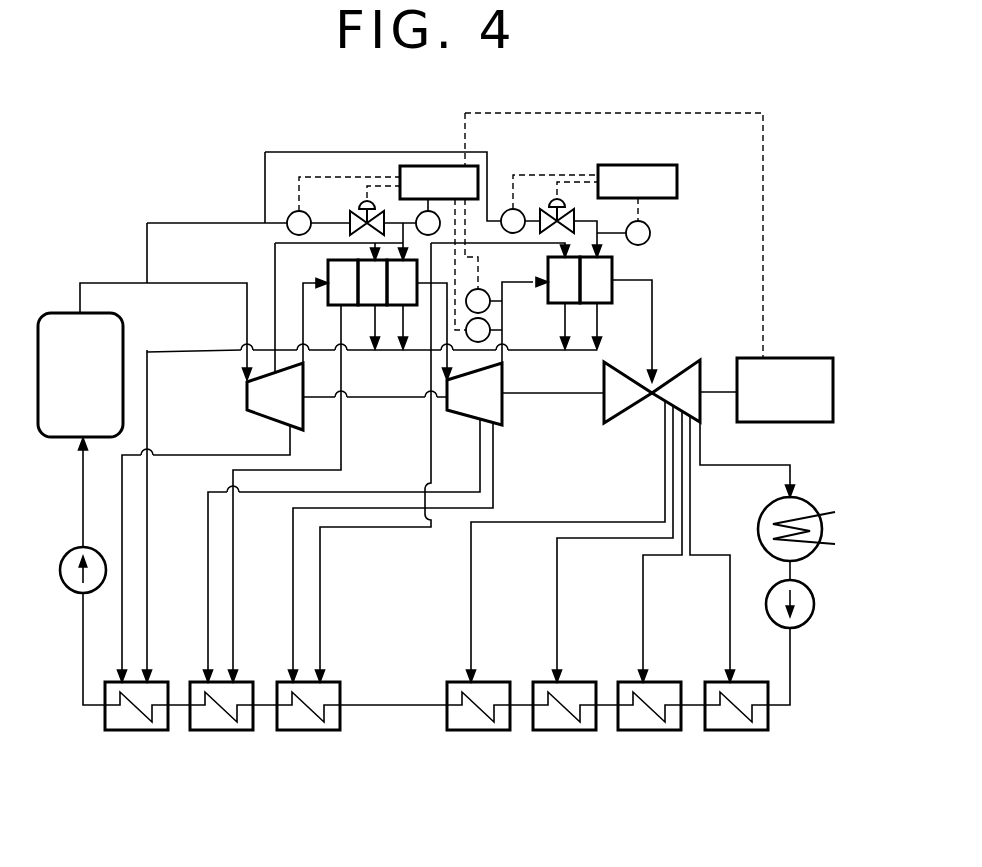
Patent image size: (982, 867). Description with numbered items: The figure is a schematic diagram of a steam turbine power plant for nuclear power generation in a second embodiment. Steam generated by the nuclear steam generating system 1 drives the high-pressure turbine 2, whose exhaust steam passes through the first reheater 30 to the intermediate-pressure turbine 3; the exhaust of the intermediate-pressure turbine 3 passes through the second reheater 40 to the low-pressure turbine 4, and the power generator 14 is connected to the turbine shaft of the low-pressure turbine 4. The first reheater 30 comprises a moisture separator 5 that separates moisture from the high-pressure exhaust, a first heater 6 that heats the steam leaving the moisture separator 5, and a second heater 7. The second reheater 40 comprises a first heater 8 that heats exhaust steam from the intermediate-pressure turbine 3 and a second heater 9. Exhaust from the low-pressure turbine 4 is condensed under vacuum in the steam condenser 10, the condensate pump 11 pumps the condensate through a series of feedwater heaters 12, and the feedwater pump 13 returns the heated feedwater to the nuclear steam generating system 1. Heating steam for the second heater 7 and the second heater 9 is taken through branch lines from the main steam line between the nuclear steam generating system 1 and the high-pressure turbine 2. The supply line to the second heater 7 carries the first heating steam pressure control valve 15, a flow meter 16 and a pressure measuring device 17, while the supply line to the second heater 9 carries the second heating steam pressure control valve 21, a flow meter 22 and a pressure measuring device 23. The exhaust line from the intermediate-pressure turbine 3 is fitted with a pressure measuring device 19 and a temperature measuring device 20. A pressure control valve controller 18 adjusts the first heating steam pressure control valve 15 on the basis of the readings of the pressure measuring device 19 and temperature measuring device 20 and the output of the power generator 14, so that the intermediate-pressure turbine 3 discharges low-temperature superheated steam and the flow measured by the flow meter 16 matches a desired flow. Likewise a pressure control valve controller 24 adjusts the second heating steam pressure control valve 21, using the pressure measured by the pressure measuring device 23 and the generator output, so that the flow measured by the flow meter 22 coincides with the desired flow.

The nuclear steam generating system 1 is at (68, 436).
The high-pressure turbine 2 is at (268, 412).
The intermediate-pressure turbine 3 is at (473, 412).
The low-pressure turbine 4 is at (603, 405).
The moisture separator 5 is at (340, 304).
The first heater 6 is at (380, 304).
The second heater 7 is at (410, 304).
The first heater 8 is at (557, 304).
The second heater 9 is at (600, 304).
The steam condenser 10 is at (810, 499).
The condensate pump 11 is at (815, 604).
The feedwater heater 12 is at (137, 731).
The feedwater pump 13 is at (70, 593).
The power generator 14 is at (802, 362).
The first heating steam pressure control valve 15 is at (351, 216).
The flow meter 16 is at (293, 211).
The pressure measuring device 17 is at (416, 222).
The pressure control valve controller 18 is at (443, 166).
The pressure measuring device 19 is at (490, 325).
The temperature measuring device 20 is at (490, 288).
The second heating steam pressure control valve 21 is at (567, 197).
The flow meter 22 is at (505, 210).
The pressure measuring device 23 is at (650, 233).
The pressure control valve controller 24 is at (648, 165).
The first reheater 30 is at (310, 245).
The second reheater 40 is at (627, 301).